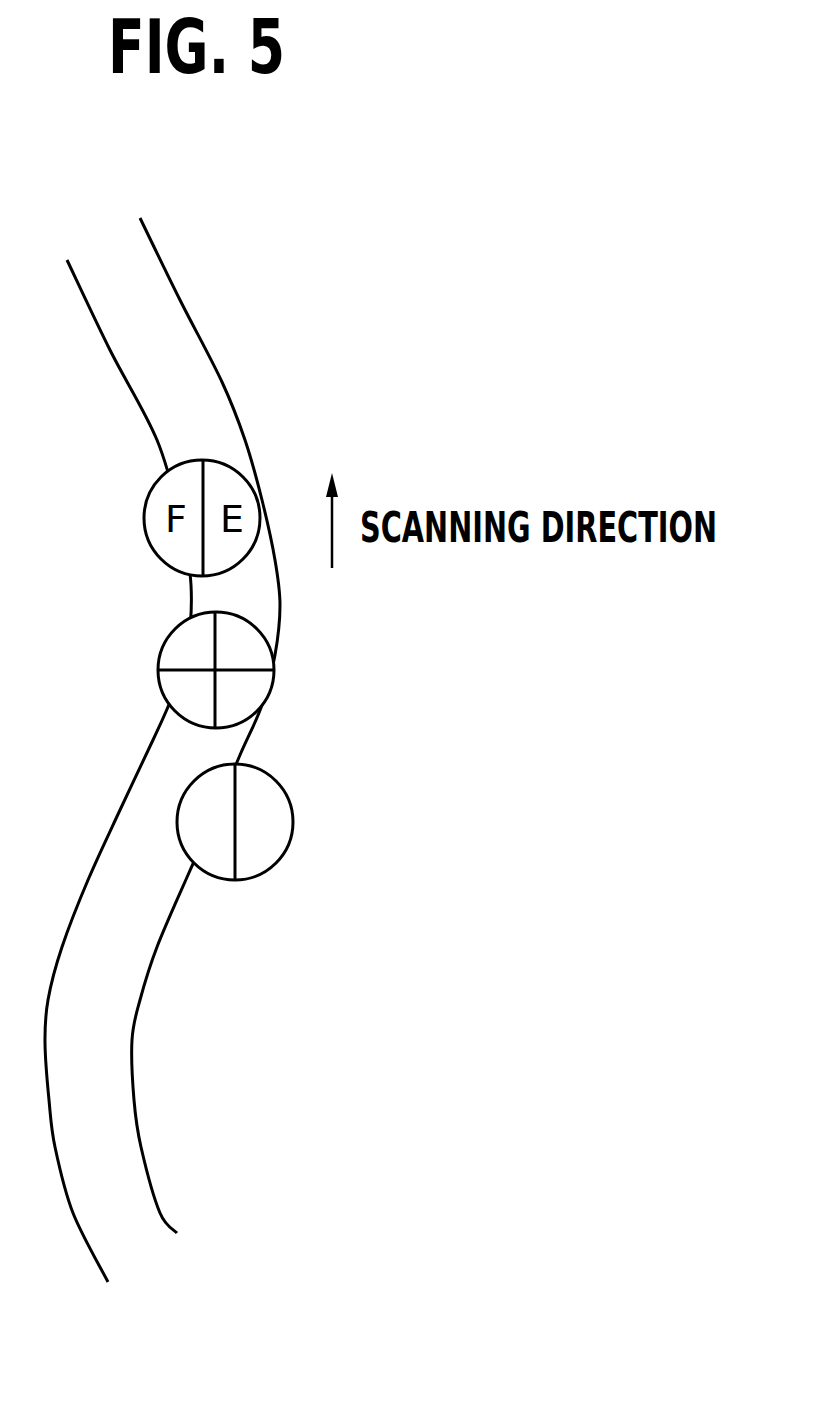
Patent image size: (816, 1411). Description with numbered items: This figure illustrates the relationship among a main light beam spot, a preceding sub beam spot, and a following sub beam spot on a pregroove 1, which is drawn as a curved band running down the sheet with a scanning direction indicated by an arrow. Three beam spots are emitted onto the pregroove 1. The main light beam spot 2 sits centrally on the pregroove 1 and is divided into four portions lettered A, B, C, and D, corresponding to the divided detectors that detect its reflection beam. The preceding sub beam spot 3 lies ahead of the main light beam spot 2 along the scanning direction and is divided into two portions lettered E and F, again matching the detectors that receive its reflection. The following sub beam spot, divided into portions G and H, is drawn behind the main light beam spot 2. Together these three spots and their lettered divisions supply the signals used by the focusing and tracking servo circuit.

The pregroove 1 is at (207, 398).
The main light beam spot 2 is at (160, 646).
The preceding sub beam spot 3 is at (292, 798).